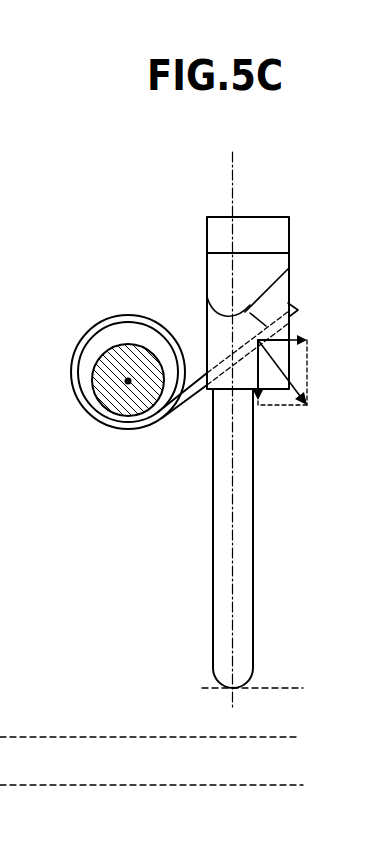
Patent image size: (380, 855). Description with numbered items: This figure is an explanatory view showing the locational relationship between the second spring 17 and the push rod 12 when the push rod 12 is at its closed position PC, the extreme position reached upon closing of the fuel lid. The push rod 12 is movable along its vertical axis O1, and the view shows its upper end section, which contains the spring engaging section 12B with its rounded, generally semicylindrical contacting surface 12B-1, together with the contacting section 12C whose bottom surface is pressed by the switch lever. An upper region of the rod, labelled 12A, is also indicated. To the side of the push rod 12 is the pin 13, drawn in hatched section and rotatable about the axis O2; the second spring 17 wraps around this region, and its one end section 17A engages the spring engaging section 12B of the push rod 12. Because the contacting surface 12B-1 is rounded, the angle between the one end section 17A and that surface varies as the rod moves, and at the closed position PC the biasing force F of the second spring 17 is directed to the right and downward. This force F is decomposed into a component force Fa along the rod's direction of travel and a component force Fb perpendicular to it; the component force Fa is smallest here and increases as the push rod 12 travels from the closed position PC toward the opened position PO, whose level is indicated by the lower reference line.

The push rod 12 is at (259, 561).
The frame head portion 12A is at (277, 295).
The spring engaging section 12B is at (256, 362).
The contacting surface 12B-1 is at (207, 293).
The contacting section 12C is at (250, 270).
The pin 13 is at (128, 414).
The second spring 17 is at (128, 315).
The one end section of the second spring 17A is at (297, 306).
The axis of the push rod O1 is at (237, 183).
The axis of the pin O2 is at (122, 368).
The biasing force F is at (304, 392).
The component force Fa is at (262, 378).
The component force Fb is at (294, 350).
The closed position PC is at (269, 691).
The opened position PO is at (169, 768).